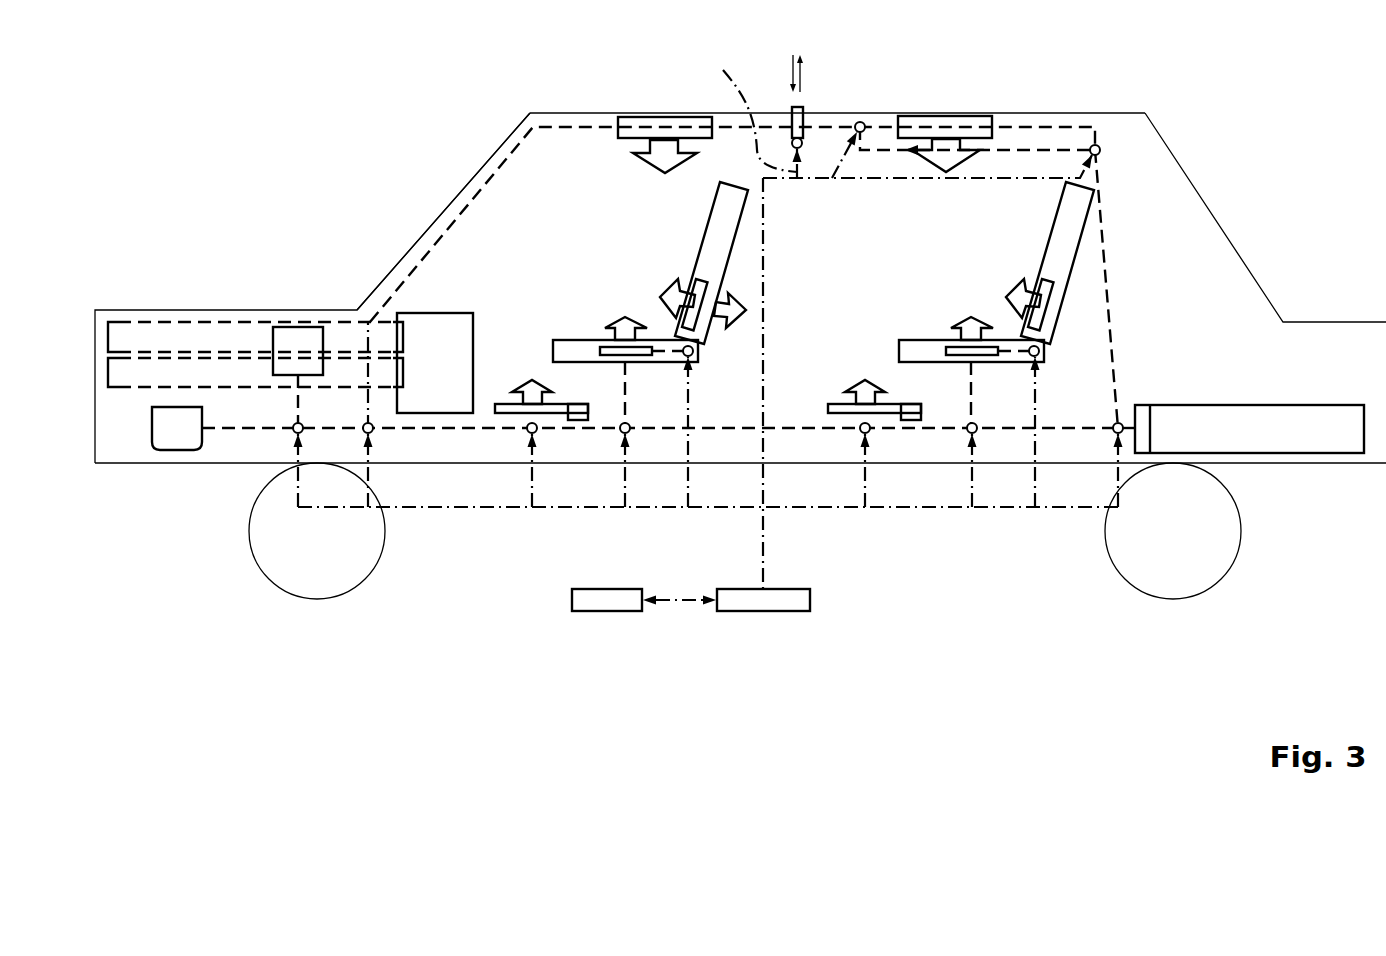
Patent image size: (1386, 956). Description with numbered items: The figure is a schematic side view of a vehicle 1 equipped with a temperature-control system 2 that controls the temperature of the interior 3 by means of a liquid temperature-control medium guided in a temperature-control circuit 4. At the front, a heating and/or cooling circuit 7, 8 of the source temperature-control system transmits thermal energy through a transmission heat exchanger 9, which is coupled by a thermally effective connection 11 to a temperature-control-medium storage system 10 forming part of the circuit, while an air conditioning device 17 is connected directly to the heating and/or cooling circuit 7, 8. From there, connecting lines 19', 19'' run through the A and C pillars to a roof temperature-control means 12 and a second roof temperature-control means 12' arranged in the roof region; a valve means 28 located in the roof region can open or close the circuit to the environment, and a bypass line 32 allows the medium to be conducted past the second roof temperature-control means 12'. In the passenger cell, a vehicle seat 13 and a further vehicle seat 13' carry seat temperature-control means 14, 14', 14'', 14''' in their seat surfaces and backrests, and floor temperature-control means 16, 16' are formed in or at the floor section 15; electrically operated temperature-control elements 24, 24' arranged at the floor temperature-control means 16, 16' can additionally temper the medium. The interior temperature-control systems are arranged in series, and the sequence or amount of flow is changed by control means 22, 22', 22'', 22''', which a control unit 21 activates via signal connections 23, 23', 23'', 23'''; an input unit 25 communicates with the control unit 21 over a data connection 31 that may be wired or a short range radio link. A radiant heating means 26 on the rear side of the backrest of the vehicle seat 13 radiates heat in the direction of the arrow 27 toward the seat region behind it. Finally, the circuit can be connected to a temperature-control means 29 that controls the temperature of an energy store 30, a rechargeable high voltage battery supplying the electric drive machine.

The vehicle 1 is at (296, 95).
The temperature-control system 2 is at (431, 95).
The interior 3 is at (558, 166).
The temperature-control circuit 4 is at (1061, 108).
The heating and/or cooling circuit 7 is at (138, 330).
The heating and/or cooling circuit 8 is at (178, 370).
The transmission heat exchanger 9 is at (297, 330).
The temperature-control-medium storage system 10 is at (178, 440).
The connection 11 is at (297, 407).
The roof temperature-control means 12 is at (665, 105).
The second roof temperature-control means 12' is at (945, 104).
The vehicle seat 13 is at (650, 302).
The vehicle seat 13' is at (996, 302).
The seat temperature-control means 14 is at (636, 453).
The seat temperature-control means 14' is at (717, 419).
The seat temperature-control means 14'' is at (983, 453).
The seat temperature-control means 14''' is at (1054, 419).
The floor section 15 is at (503, 388).
The floor temperature-control means 16 is at (541, 481).
The floor temperature-control means 16' is at (875, 469).
The air conditioning device 17 is at (453, 392).
The connecting line 19' is at (732, 224).
The connecting line 19'' is at (1152, 289).
The control unit 21 is at (765, 600).
The control means 22 is at (254, 490).
The control means 22' is at (873, 84).
The control means 22'' is at (1109, 96).
The control means 22''' is at (772, 92).
The signal connection 23 is at (709, 440).
The signal connection 23' is at (845, 193).
The signal connection 23'' is at (927, 204).
The signal connection 23''' is at (744, 107).
The temperature-control element 24 is at (573, 481).
The temperature-control element 24' is at (915, 481).
The input unit 25 is at (607, 600).
The radiant heating means 26 is at (727, 277).
The arrow 27 is at (746, 310).
The valve means 28 is at (803, 120).
The temperature-control means 29 is at (1142, 418).
The energy store 30 is at (1205, 418).
The data connection 31 is at (667, 600).
The bypass line 32 is at (1024, 150).